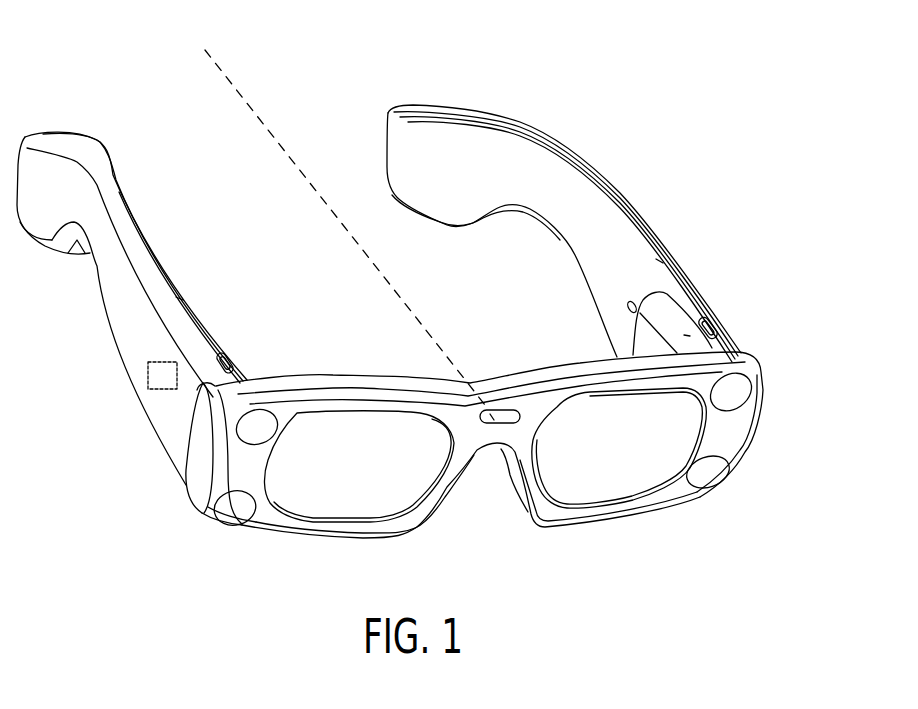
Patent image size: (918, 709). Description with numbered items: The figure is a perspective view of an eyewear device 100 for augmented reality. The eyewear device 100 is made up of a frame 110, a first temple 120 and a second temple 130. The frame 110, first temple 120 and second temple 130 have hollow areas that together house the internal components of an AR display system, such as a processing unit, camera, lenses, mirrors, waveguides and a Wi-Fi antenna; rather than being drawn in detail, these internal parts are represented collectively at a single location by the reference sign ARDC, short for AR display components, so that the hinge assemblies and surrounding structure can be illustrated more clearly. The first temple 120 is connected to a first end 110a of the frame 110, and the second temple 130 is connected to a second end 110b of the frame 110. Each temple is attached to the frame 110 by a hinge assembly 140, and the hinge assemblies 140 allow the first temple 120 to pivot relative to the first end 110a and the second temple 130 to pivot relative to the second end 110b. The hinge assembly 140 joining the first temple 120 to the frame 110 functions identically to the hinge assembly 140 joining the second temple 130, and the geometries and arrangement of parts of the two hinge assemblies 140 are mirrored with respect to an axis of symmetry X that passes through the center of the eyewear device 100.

The eyewear device 100 is at (92, 72).
The frame 110 is at (277, 524).
The first end 110a is at (202, 452).
The second end 110b is at (758, 411).
The first temple 120 is at (132, 338).
The second temple 130 is at (630, 213).
The hinge assembly 140 is at (180, 407).
The AR display components ARDC is at (147, 374).
The axis of symmetry X is at (262, 118).